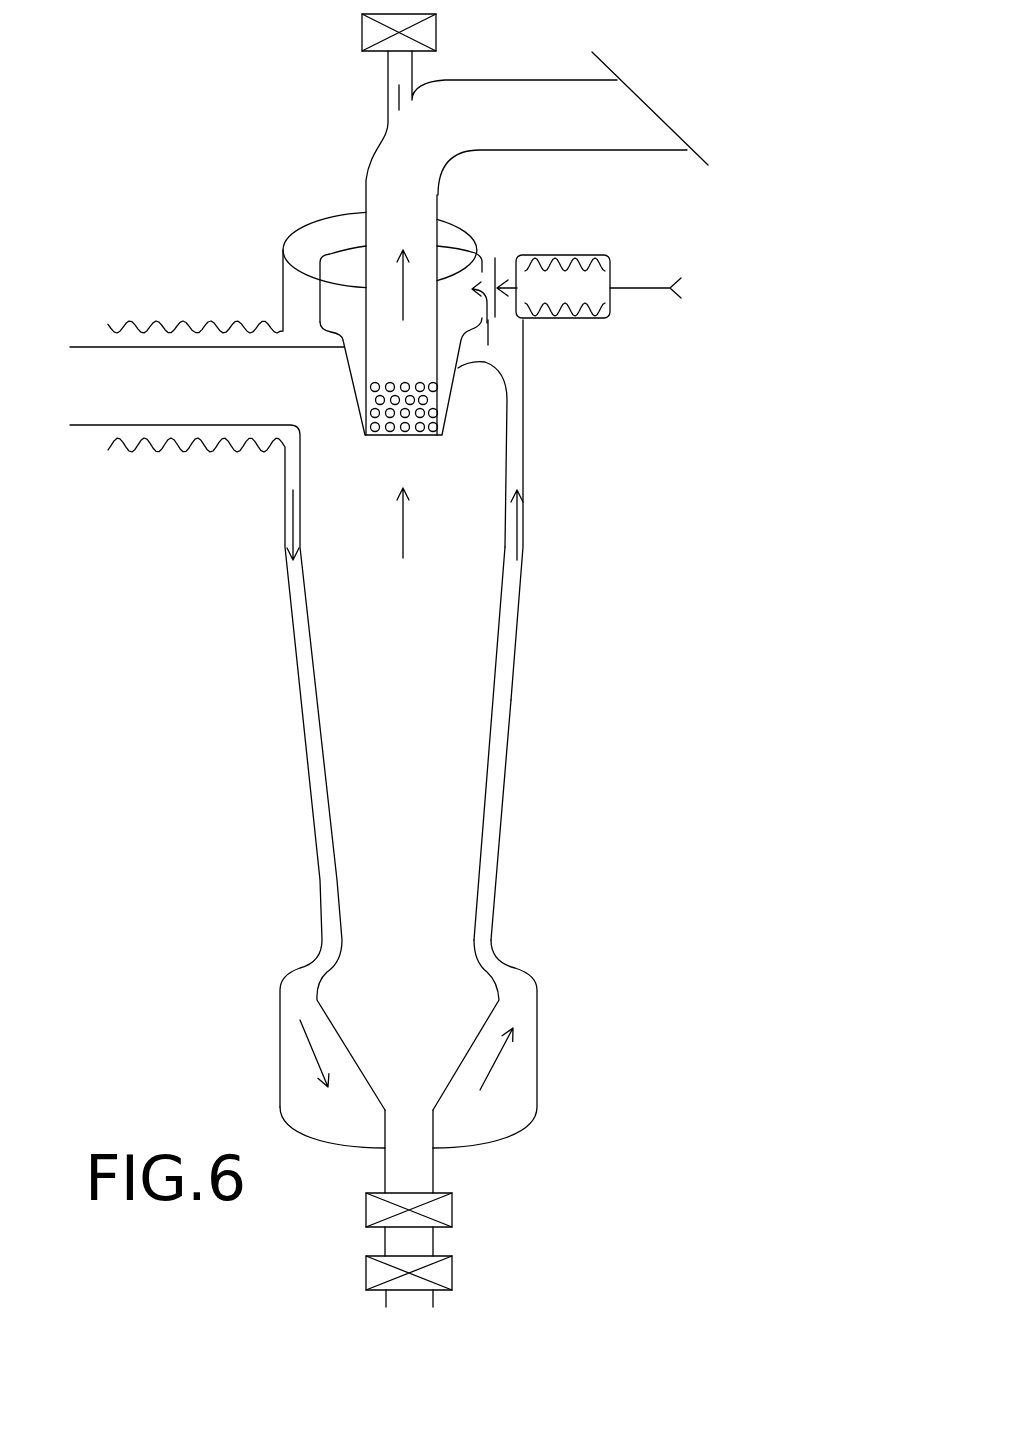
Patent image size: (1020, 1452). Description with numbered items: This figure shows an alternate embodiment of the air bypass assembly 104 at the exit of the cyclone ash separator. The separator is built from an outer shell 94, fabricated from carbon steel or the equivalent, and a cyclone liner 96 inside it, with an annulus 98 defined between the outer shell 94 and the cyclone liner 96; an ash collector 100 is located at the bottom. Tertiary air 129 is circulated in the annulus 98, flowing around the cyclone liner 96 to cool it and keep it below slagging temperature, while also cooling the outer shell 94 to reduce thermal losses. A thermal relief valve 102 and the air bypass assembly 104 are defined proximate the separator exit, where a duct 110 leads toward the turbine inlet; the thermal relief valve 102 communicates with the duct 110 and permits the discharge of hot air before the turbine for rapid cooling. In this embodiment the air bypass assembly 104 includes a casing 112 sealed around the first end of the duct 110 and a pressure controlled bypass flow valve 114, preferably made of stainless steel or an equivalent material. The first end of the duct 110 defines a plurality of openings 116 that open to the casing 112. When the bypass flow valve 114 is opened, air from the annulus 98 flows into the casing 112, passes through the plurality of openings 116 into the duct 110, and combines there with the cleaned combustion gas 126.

The outer shell 94 is at (518, 625).
The cyclone liner 96 is at (495, 680).
The annulus 98 is at (497, 793).
The ash collector 100 is at (541, 1161).
The thermal relief valve 102 is at (437, 32).
The air bypass assembly 104 is at (726, 211).
The duct 110 is at (373, 155).
The casing 112 is at (473, 218).
The pressure controlled bypass flow valve 114 is at (590, 288).
The plurality of openings 116 is at (440, 410).
The cleaned combustion gas 126 is at (300, 272).
The tertiary air 129 is at (517, 527).